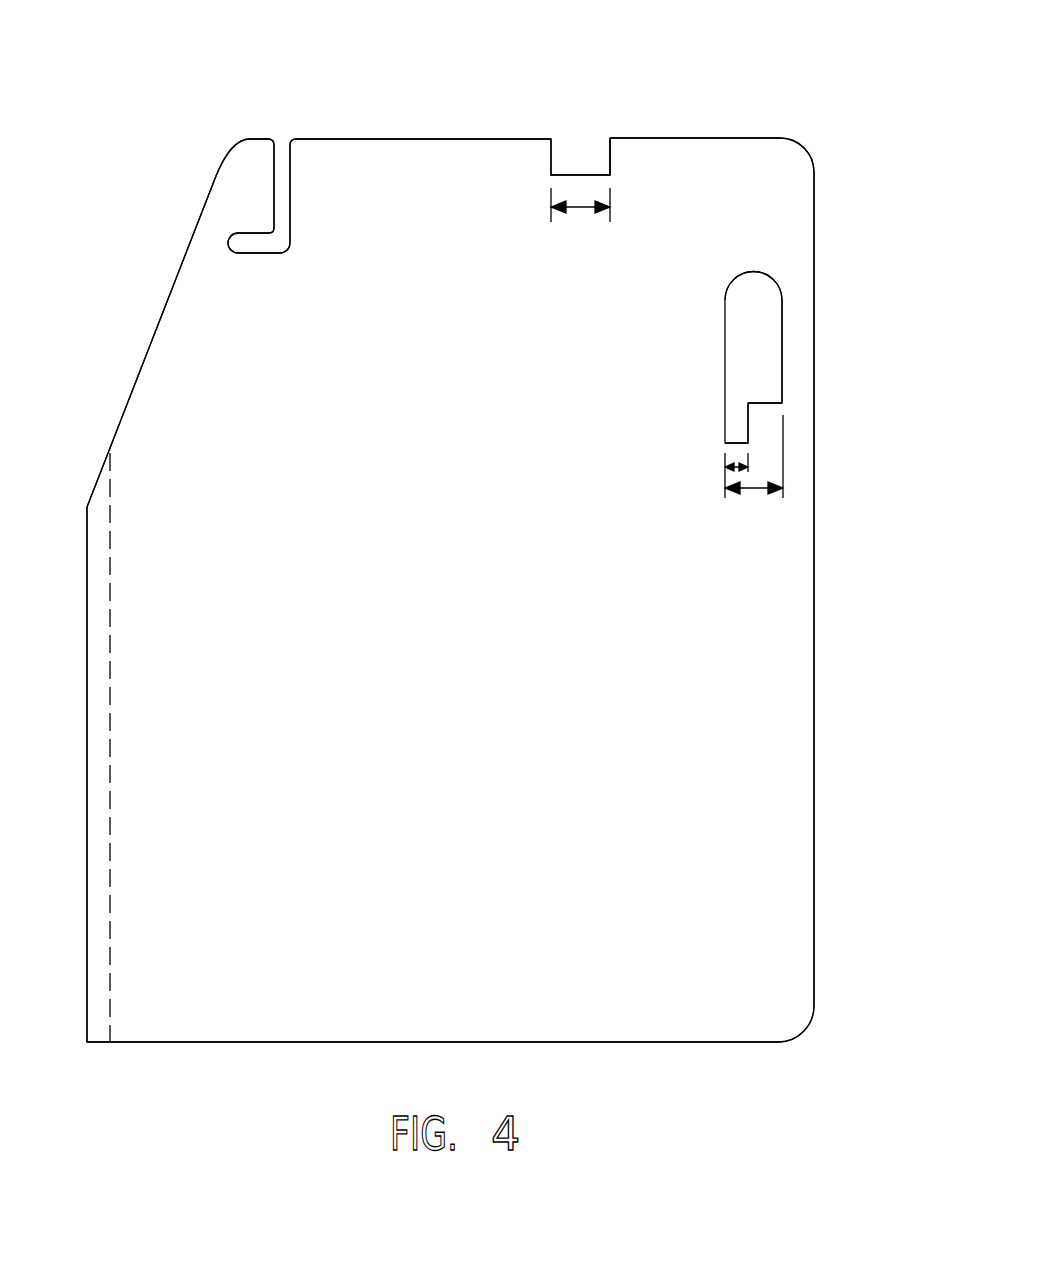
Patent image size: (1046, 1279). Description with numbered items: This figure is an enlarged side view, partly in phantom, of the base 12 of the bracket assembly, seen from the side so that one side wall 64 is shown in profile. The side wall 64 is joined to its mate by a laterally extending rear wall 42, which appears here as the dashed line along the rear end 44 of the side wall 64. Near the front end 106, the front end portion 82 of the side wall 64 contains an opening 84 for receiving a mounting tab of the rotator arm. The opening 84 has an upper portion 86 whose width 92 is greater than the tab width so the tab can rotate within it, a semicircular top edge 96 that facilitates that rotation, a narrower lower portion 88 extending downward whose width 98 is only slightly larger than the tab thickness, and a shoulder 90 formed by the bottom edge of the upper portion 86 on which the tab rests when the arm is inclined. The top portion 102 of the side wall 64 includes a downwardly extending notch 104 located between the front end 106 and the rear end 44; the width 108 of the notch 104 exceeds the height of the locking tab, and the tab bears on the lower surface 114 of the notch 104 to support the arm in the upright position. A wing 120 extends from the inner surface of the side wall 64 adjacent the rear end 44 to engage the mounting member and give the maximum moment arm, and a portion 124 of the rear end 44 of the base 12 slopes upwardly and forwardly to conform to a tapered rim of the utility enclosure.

The base 12 is at (308, 88).
The rear wall 42 is at (95, 758).
The rear end 44 is at (86, 695).
The side wall 64 is at (458, 659).
The front end portion 82 is at (782, 850).
The opening 84 is at (737, 357).
The upper portion 86 is at (768, 305).
The lower portion 88 is at (737, 423).
The shoulder 90 is at (767, 402).
The width of the upper portion 92 is at (755, 488).
The top edge 96 is at (737, 280).
The width of the lower portion 98 is at (737, 472).
The top portion 102 is at (481, 158).
The notch 104 is at (603, 158).
The front end 106 is at (814, 652).
The width of the notch 108 is at (577, 208).
The lower surface 114 is at (572, 175).
The wing 120 is at (255, 188).
The portion of the rear end 124 is at (152, 333).